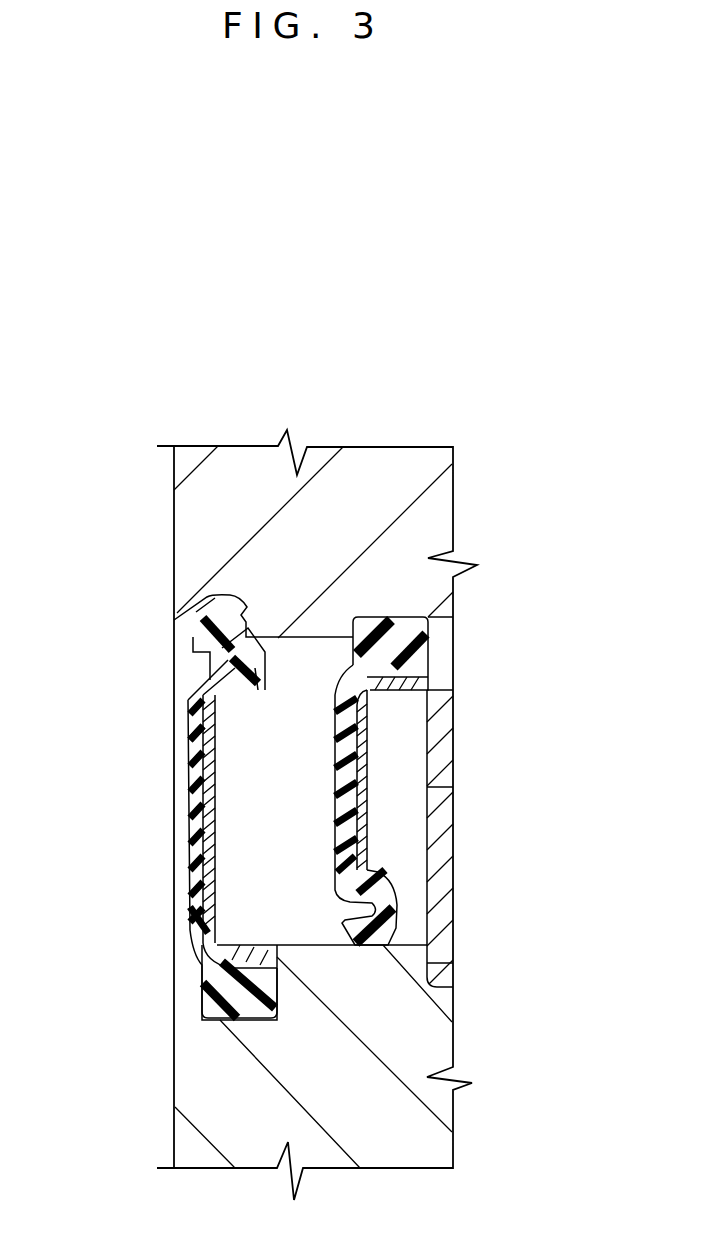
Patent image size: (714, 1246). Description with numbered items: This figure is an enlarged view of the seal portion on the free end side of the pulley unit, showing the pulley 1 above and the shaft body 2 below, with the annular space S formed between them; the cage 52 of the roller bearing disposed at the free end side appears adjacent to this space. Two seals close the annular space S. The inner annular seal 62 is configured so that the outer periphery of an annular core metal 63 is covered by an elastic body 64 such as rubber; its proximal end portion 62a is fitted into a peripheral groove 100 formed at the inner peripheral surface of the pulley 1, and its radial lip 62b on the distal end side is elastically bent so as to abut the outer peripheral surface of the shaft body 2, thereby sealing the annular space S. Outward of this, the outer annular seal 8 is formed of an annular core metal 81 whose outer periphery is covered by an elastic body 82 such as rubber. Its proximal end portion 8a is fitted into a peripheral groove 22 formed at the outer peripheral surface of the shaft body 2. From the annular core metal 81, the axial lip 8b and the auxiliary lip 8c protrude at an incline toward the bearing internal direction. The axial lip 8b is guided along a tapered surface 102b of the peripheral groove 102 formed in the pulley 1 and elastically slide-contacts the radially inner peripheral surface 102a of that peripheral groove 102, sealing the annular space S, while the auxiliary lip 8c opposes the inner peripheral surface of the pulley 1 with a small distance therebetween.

The pulley 1 is at (395, 480).
The shaft body 2 is at (417, 1042).
The outer annular seal 8 is at (185, 748).
The proximal end portion 8a is at (202, 1000).
The axial lip 8b is at (193, 637).
The auxiliary lip 8c is at (255, 668).
The peripheral groove 22 is at (235, 1022).
The cage 52 is at (440, 830).
The inner annular seal 62 is at (415, 627).
The proximal end portion 62a is at (378, 614).
The radial lip 62b is at (395, 920).
The annular core metal 63 is at (363, 763).
The elastic body 64 is at (413, 643).
The annular core metal 81 is at (217, 802).
The elastic body 82 is at (190, 928).
The peripheral groove 100 is at (410, 614).
The peripheral groove 102 is at (218, 593).
The radially inner peripheral surface 102a is at (254, 598).
The tapered surface 102b is at (197, 602).
The annular space S is at (310, 667).